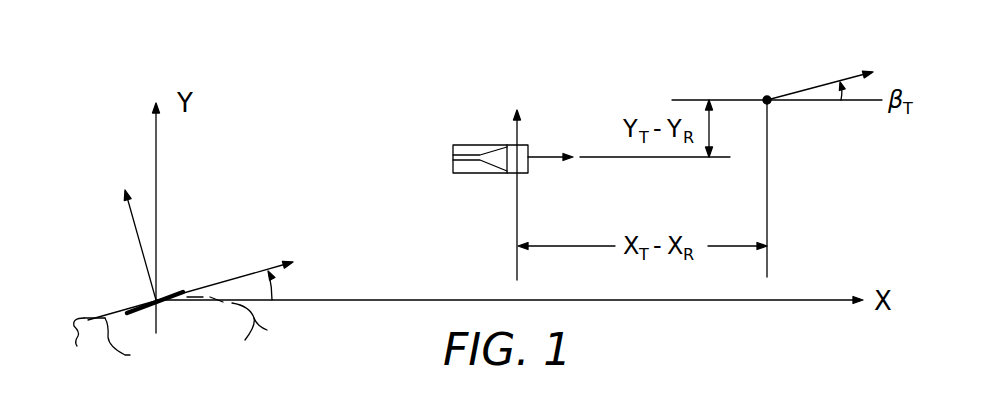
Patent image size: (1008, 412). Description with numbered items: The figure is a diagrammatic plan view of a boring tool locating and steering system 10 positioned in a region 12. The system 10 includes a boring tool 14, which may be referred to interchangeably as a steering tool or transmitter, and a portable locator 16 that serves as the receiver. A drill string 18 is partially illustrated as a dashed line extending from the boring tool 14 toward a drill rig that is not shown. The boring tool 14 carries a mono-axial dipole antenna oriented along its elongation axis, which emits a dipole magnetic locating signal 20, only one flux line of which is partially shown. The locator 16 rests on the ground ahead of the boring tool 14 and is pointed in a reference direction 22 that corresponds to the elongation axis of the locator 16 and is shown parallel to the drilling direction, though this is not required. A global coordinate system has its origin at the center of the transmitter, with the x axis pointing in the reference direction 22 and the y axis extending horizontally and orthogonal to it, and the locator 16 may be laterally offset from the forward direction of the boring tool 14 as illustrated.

The boring tool locating and steering system 10 is at (458, 85).
The region 12 is at (322, 158).
The boring tool 14 is at (177, 293).
The portable locator 16 is at (480, 145).
The drill string 18 is at (118, 343).
The dipole magnetic locating signal 20 is at (245, 340).
The reference direction 22 is at (547, 153).